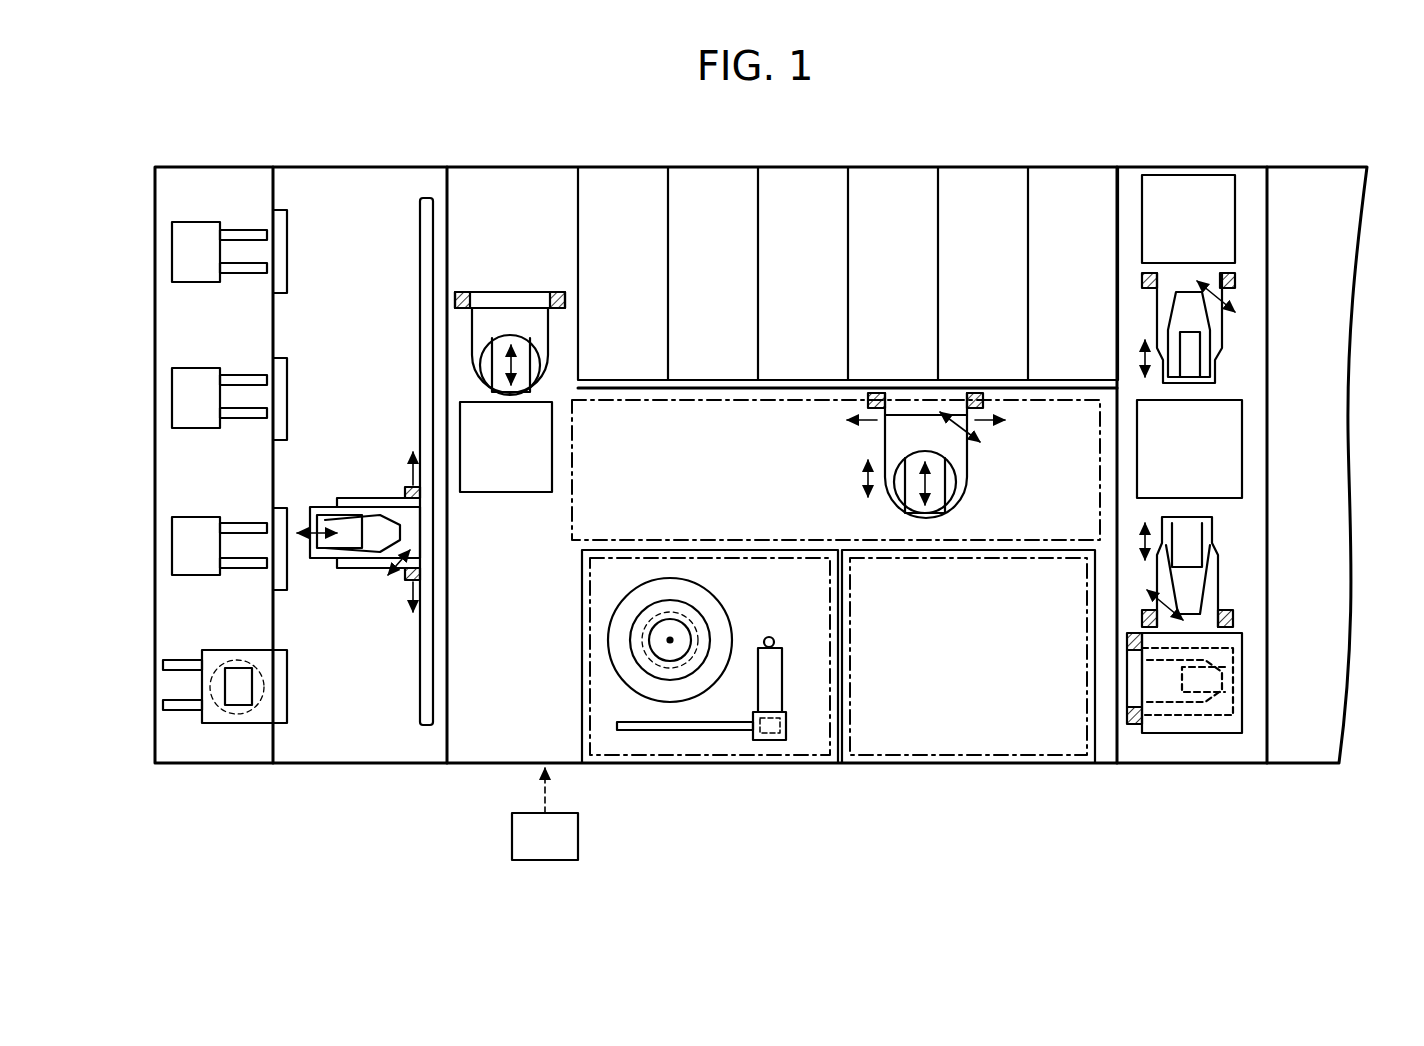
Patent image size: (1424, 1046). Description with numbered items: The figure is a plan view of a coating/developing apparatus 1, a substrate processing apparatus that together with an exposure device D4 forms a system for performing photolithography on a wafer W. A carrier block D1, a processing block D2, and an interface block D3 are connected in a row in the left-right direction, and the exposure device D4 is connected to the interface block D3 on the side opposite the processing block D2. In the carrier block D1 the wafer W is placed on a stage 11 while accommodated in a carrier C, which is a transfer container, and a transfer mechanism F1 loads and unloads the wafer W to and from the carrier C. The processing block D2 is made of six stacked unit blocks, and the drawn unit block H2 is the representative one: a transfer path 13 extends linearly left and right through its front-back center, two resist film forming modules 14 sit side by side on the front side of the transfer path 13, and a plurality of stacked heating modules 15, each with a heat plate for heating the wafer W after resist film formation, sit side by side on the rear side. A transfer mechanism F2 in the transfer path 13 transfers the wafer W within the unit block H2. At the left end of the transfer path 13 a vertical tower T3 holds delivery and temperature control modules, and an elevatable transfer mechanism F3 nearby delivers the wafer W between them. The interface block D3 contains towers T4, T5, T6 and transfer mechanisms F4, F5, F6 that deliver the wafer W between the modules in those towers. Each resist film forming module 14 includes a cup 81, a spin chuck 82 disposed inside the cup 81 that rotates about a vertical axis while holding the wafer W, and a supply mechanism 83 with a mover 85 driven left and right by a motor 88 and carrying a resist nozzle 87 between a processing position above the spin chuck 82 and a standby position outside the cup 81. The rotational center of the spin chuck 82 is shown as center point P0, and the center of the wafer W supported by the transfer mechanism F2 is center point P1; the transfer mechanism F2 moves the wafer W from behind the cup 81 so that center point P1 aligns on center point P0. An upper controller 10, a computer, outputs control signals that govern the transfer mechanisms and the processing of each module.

The coating/developing apparatus 1 is at (433, 822).
The upper controller 10 is at (578, 837).
The stage 11 is at (172, 399).
The transfer path 13 is at (570, 520).
The resist film forming module 14 is at (716, 755).
The heating module 15 is at (625, 180).
The cup 81 is at (712, 598).
The spin chuck 82 is at (648, 636).
The supply mechanism 83 is at (783, 685).
The mover 85 is at (786, 725).
The resist nozzle 87 is at (771, 637).
The motor 88 is at (770, 740).
The carrier C is at (238, 723).
The wafer W is at (222, 712).
The carrier block D1 is at (155, 162).
The processing block D2 is at (1115, 162).
The interface block D3 is at (1263, 162).
The exposure device D4 is at (1367, 162).
The transfer mechanism F1 is at (363, 590).
The transfer mechanism F2 is at (850, 476).
The transfer mechanism F3 is at (512, 292).
The transfer mechanism F4 is at (1215, 583).
The transfer mechanism F5 is at (1215, 365).
The transfer mechanism F6 is at (1168, 715).
The tower T3 is at (493, 493).
The tower T4 is at (1242, 448).
The tower T5 is at (1242, 713).
The tower T6 is at (1232, 222).
The unit block H2 is at (684, 755).
The center point P0 is at (670, 640).
The center point P1 is at (928, 482).